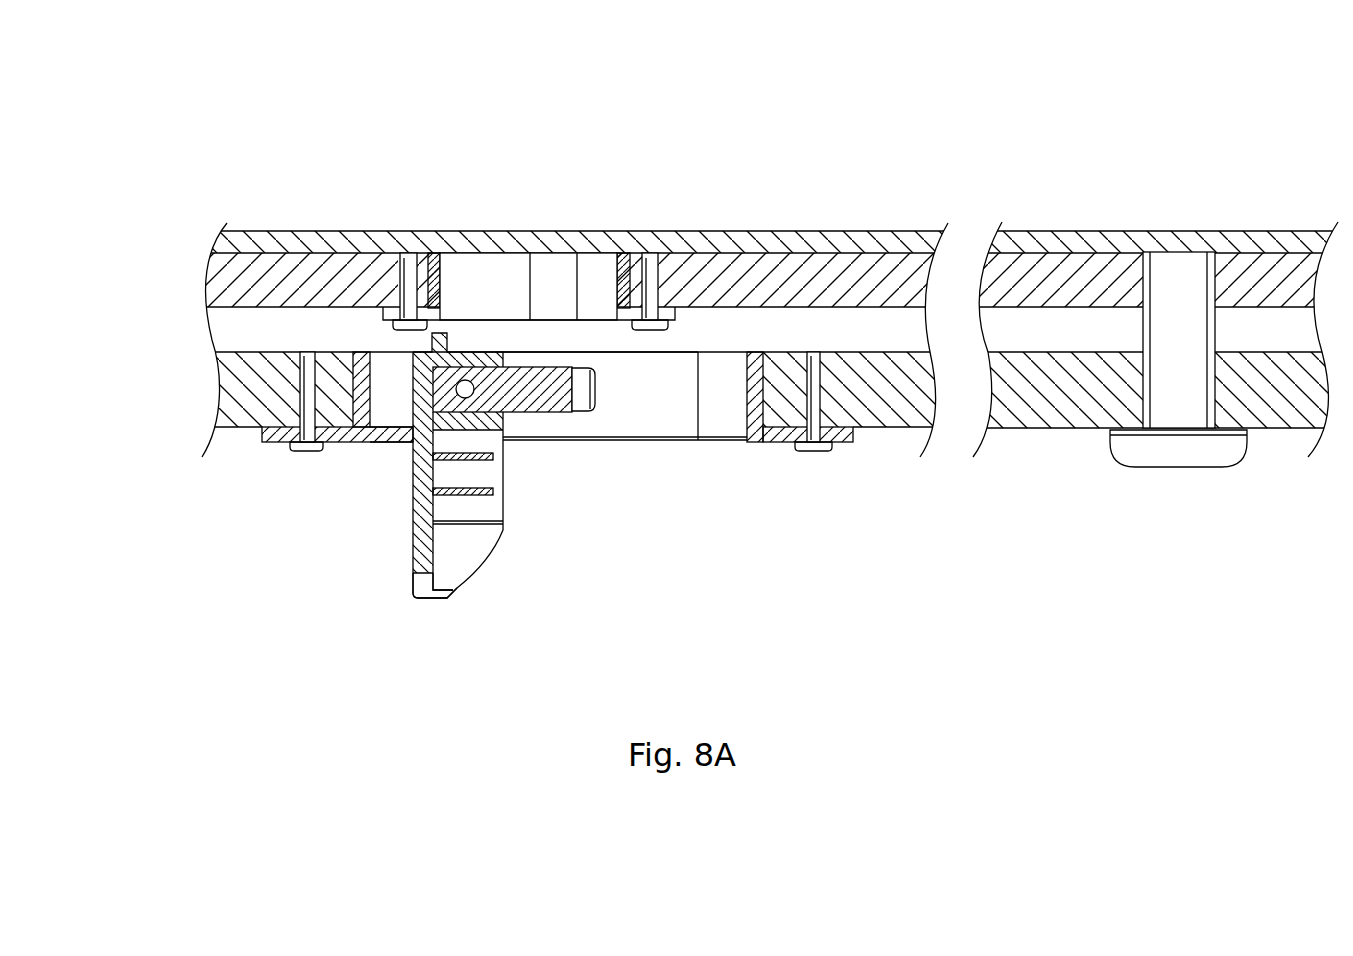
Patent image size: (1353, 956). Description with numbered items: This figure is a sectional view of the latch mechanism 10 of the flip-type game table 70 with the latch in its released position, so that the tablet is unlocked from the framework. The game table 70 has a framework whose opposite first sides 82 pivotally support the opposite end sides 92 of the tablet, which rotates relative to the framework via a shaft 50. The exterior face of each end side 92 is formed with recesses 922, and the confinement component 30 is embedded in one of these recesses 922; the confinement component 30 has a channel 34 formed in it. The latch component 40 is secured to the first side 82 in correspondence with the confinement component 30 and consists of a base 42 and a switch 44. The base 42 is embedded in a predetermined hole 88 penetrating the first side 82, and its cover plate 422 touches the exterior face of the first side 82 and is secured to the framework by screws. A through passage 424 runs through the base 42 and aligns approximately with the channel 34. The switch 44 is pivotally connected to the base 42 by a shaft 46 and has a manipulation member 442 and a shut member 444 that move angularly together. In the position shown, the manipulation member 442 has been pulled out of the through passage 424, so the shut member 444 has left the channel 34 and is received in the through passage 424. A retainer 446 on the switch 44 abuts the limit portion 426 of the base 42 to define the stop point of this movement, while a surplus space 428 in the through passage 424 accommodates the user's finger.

The latch mechanism 10 is at (677, 477).
The confinement component 30 is at (620, 255).
The channel 34 is at (548, 275).
The latch component 40 is at (515, 510).
The base 42 is at (314, 468).
The switch 44 is at (465, 585).
The shaft 46 is at (470, 396).
The shaft 50 is at (1173, 453).
The flip-type game table 70 is at (782, 215).
The first side 82 is at (240, 383).
The predetermined hole 88 is at (767, 390).
The end side 92 is at (237, 282).
The cover plate 422 is at (282, 440).
The through passage 424 is at (677, 378).
The limit portion 426 is at (387, 438).
The surplus space 428 is at (720, 415).
The manipulation member 442 is at (415, 572).
The shut member 444 is at (563, 392).
The retainer 446 is at (547, 388).
The recess 922 is at (435, 255).